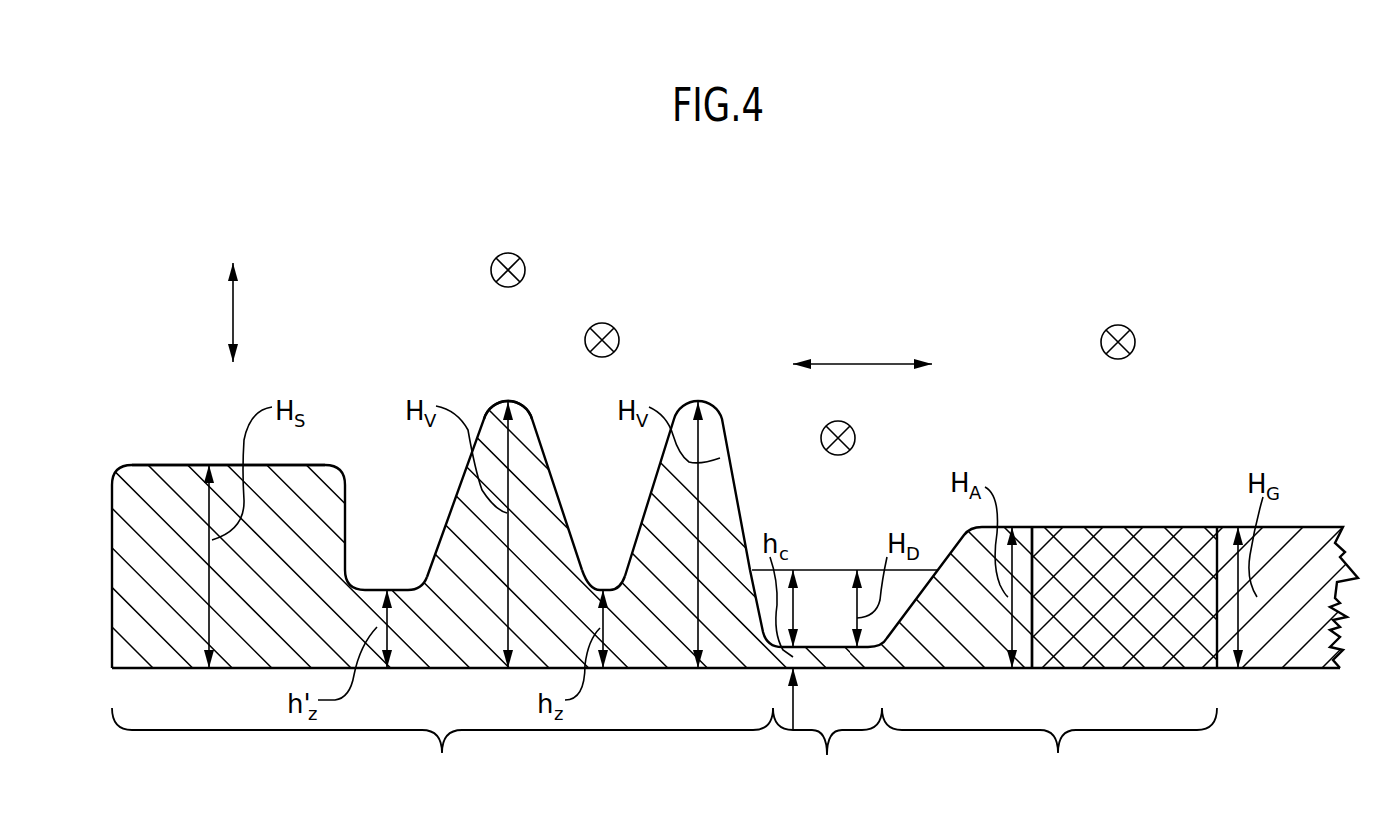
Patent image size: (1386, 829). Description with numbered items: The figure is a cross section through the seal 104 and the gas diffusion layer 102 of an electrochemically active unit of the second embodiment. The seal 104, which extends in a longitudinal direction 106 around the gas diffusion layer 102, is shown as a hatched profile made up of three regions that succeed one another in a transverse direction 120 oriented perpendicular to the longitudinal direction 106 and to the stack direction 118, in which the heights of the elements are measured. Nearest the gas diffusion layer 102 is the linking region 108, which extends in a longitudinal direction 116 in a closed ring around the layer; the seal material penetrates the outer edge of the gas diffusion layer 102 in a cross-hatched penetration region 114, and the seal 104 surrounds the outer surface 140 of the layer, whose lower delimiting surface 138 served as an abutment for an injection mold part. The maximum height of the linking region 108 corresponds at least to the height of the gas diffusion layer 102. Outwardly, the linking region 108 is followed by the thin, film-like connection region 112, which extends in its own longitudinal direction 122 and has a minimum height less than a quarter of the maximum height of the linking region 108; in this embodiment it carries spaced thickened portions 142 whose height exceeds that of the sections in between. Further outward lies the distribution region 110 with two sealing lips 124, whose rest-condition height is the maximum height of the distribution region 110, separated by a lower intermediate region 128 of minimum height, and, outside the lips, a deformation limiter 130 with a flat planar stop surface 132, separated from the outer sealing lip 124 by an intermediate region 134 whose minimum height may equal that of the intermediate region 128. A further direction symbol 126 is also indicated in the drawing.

The gas diffusion layer 102 is at (1283, 560).
The seal 104 is at (501, 392).
The longitudinal direction of the seal 106 is at (604, 323).
The linking region 108 is at (1049, 748).
The distribution region 110 is at (442, 748).
The connection region 112 is at (827, 748).
The penetration region 114 is at (1127, 587).
The longitudinal direction of the linking region 116 is at (1135, 340).
The stack direction 118 is at (233, 312).
The transverse direction 120 is at (862, 364).
The longitudinal direction of the connection region 122 is at (855, 438).
The sealing lip 124 is at (528, 458).
The axis 126 is at (508, 253).
The intermediate region 128 is at (603, 590).
The deformation limiter 130 is at (155, 485).
The stop surface 132 is at (178, 462).
The intermediate region 134 is at (387, 590).
The delimiting surface 138 is at (1283, 670).
The outer surface 140 is at (1032, 562).
The thickened portion 142 is at (813, 587).